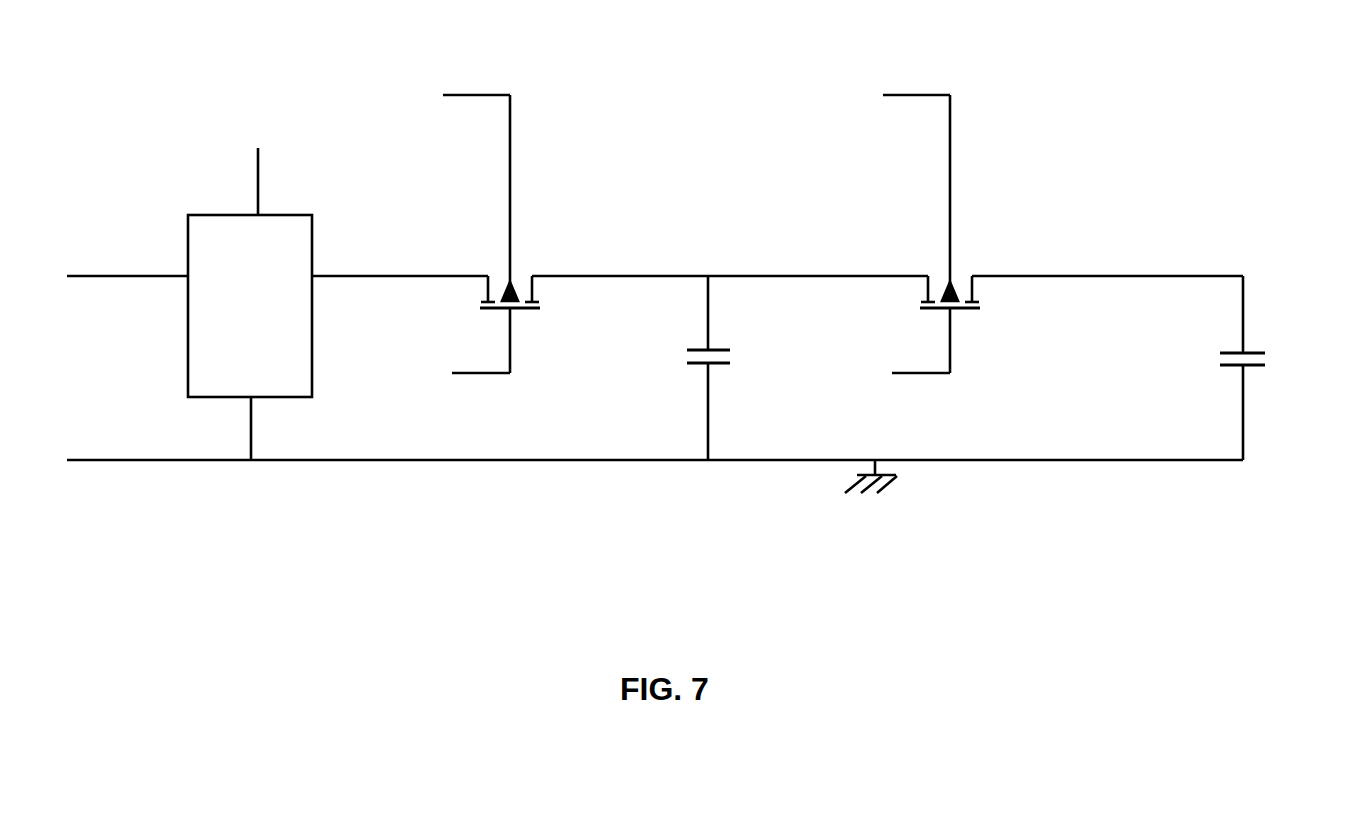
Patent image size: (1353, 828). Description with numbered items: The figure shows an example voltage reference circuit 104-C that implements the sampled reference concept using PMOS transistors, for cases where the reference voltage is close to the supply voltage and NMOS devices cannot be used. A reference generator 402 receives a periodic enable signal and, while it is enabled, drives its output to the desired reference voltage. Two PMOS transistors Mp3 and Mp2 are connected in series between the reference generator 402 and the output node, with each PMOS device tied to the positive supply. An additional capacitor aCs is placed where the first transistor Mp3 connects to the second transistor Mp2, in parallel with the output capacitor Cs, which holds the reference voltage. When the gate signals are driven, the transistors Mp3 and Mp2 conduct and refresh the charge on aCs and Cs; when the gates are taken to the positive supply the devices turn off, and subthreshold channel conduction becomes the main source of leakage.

The voltage reference circuit 104-C is at (226, 67).
The reference generator 402 is at (250, 306).
The PMOS transistor Mp3 is at (509, 232).
The PMOS transistor Mp2 is at (957, 232).
The capacitor Cs is at (1283, 368).
The additional capacitor αCs aCs is at (752, 368).